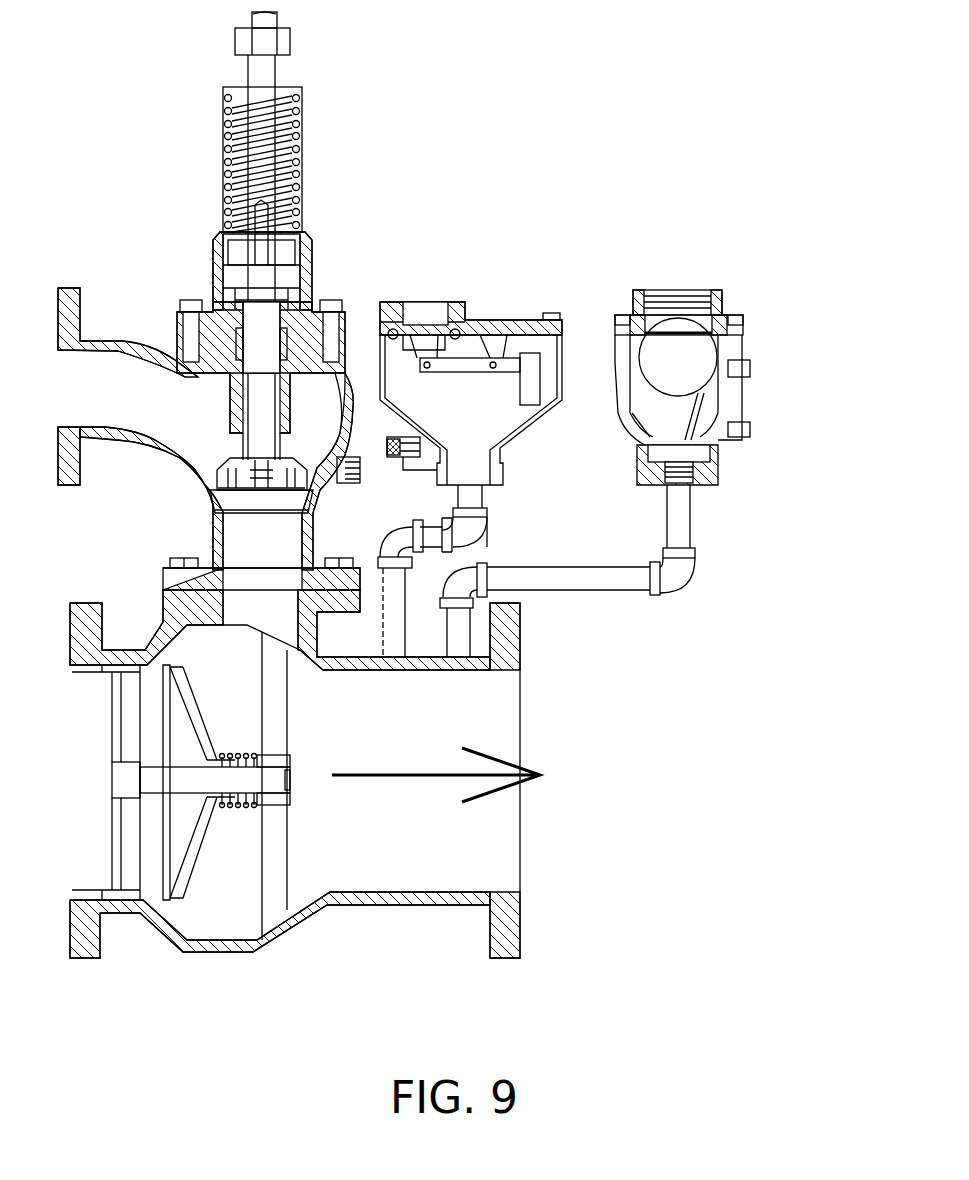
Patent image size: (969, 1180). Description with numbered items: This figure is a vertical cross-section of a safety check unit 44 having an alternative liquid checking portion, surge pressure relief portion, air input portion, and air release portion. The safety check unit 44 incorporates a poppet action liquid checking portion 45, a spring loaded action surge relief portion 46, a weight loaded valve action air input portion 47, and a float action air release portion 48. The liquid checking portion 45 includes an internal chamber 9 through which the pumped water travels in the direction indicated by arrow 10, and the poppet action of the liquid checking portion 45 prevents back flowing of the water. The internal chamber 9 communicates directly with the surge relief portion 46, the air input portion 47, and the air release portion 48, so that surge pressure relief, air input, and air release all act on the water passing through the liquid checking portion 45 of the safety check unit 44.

The safety check unit 44 is at (132, 160).
The surge relief portion 46 is at (345, 272).
The air input portion 47 is at (518, 288).
The air release portion 48 is at (758, 295).
The liquid checking portion 45 is at (540, 722).
The internal chamber 9 is at (320, 726).
The arrow 10 is at (357, 777).